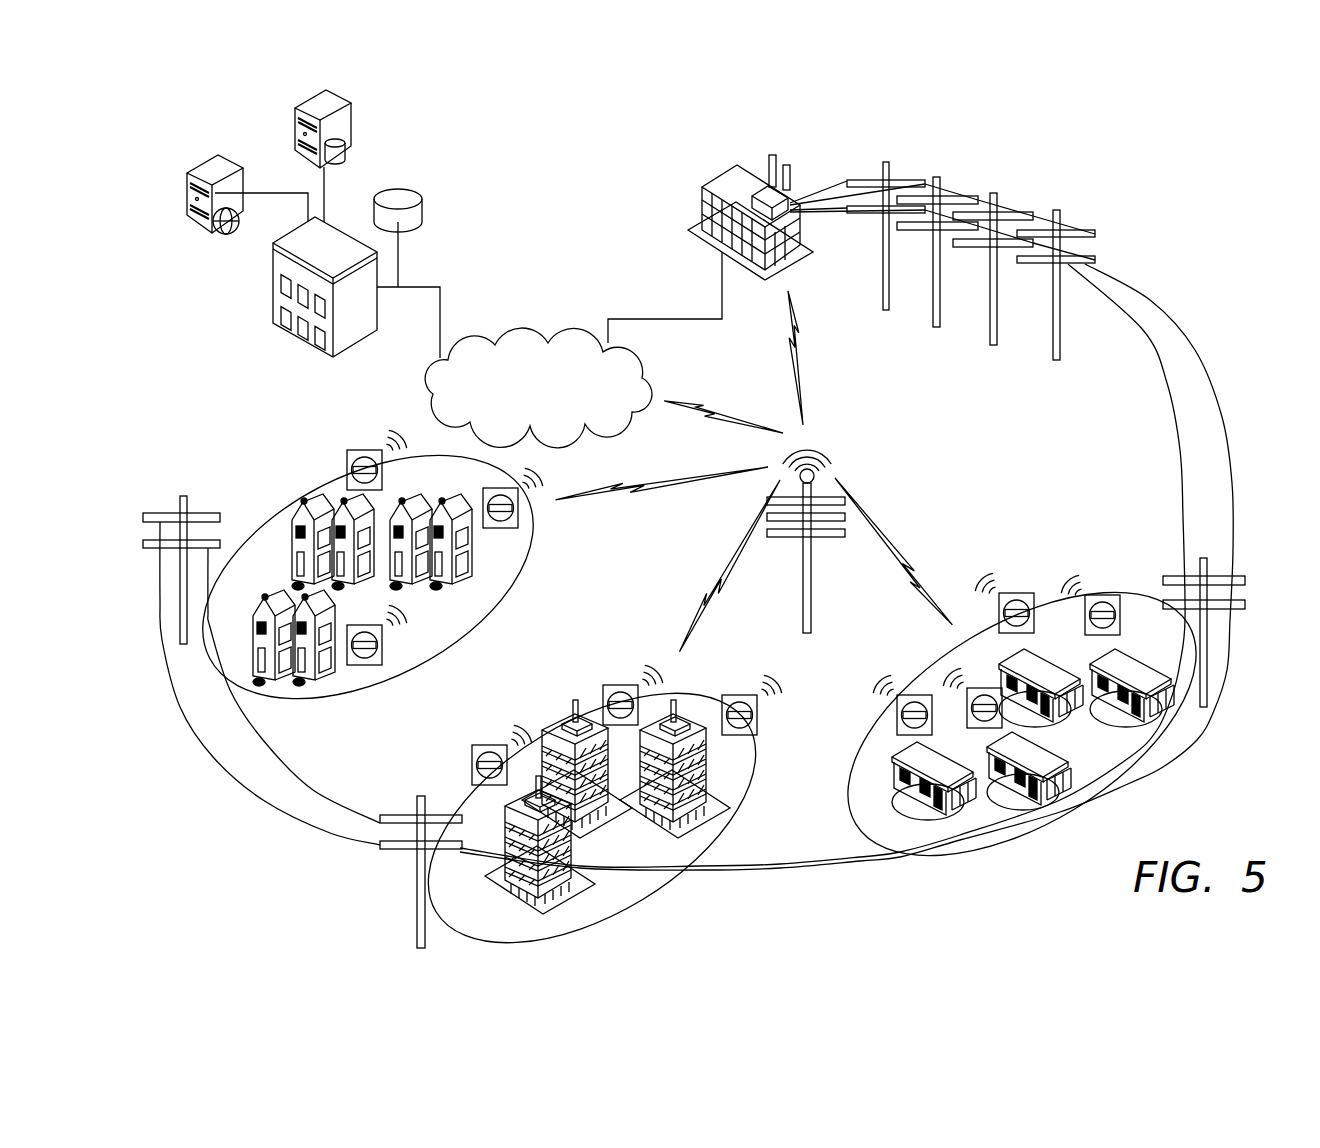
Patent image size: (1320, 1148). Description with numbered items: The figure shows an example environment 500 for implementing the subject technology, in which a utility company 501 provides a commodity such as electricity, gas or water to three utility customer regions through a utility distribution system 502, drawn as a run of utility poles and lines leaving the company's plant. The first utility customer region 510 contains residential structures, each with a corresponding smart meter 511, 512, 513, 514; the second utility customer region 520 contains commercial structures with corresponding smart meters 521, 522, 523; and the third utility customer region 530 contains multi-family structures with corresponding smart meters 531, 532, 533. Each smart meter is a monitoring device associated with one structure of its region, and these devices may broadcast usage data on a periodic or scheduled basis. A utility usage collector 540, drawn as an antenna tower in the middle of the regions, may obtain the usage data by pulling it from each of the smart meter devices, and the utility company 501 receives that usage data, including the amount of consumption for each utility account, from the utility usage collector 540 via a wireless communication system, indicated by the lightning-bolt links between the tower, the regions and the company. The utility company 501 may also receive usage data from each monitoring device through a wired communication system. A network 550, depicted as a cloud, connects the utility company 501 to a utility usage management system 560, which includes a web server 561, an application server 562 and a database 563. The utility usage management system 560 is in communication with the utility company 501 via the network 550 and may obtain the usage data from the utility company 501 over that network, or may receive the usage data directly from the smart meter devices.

The environment 500 is at (1178, 185).
The utility company 501 is at (790, 200).
The utility distribution system 502 is at (970, 197).
The utility customer region 510 is at (1142, 600).
The smart meter 511 is at (912, 695).
The smart meter 512 is at (984, 688).
The smart meter 513 is at (1016, 593).
The smart meter 514 is at (1100, 595).
The utility customer region 520 is at (690, 698).
The smart meter 521 is at (739, 695).
The smart meter 522 is at (620, 685).
The smart meter 523 is at (489, 745).
The utility customer region 530 is at (253, 550).
The smart meter 531 is at (365, 665).
The smart meter 532 is at (363, 450).
The smart meter 533 is at (500, 488).
The utility usage collector 540 is at (827, 537).
The network 550 is at (487, 333).
The utility usage management system 560 is at (283, 325).
The web server 561 is at (243, 178).
The application server 562 is at (355, 120).
The database 563 is at (413, 187).